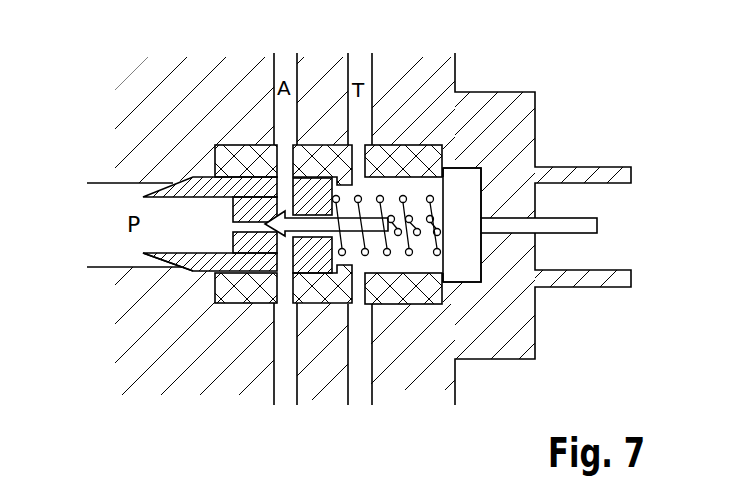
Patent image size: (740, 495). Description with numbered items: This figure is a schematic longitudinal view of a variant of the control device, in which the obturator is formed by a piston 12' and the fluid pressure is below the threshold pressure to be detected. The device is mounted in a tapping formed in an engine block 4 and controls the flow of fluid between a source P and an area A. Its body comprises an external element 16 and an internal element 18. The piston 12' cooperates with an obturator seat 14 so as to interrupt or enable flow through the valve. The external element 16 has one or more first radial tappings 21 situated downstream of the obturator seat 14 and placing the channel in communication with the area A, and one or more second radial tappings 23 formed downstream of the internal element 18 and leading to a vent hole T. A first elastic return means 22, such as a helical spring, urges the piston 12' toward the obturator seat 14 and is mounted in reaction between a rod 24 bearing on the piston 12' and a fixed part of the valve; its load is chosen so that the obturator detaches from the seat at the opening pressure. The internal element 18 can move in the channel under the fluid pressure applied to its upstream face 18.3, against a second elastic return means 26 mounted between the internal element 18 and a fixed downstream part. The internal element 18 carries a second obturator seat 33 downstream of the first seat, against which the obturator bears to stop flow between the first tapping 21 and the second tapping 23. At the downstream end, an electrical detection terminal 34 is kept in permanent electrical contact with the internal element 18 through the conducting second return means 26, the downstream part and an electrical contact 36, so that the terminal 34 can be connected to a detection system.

The engine block 4 is at (142, 121).
The obturator seat 14 is at (262, 212).
The first radial tapping 21 is at (281, 158).
The second obturator seat 33 is at (330, 183).
The second radial tapping 23 is at (358, 162).
The electrical contact 36 is at (465, 197).
The electrical detection terminal 34 is at (586, 226).
The upstream face 18.3 is at (177, 272).
The internal element 18 is at (197, 283).
The external element 16 is at (244, 286).
The piston 12' is at (326, 339).
The rod 24 is at (323, 240).
The second elastic return means 26 is at (389, 256).
The first elastic return means 22 is at (420, 240).